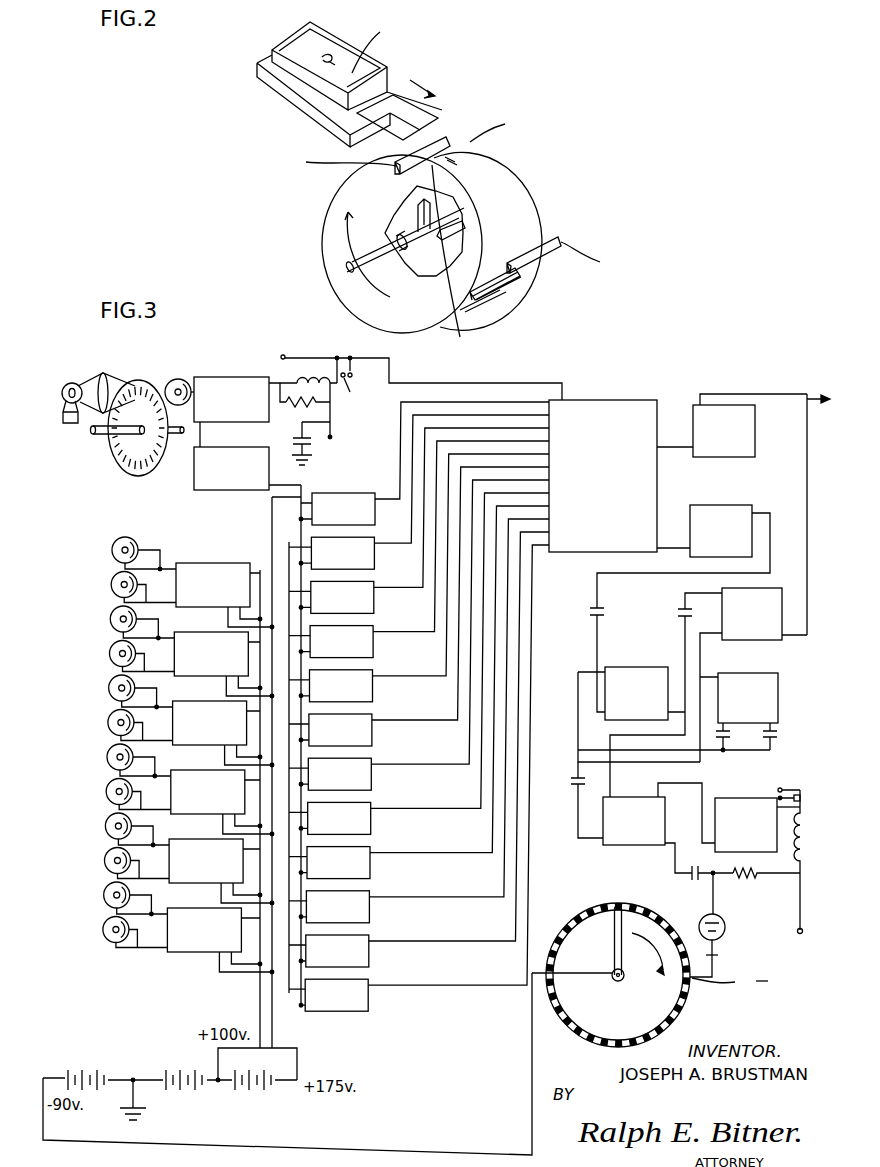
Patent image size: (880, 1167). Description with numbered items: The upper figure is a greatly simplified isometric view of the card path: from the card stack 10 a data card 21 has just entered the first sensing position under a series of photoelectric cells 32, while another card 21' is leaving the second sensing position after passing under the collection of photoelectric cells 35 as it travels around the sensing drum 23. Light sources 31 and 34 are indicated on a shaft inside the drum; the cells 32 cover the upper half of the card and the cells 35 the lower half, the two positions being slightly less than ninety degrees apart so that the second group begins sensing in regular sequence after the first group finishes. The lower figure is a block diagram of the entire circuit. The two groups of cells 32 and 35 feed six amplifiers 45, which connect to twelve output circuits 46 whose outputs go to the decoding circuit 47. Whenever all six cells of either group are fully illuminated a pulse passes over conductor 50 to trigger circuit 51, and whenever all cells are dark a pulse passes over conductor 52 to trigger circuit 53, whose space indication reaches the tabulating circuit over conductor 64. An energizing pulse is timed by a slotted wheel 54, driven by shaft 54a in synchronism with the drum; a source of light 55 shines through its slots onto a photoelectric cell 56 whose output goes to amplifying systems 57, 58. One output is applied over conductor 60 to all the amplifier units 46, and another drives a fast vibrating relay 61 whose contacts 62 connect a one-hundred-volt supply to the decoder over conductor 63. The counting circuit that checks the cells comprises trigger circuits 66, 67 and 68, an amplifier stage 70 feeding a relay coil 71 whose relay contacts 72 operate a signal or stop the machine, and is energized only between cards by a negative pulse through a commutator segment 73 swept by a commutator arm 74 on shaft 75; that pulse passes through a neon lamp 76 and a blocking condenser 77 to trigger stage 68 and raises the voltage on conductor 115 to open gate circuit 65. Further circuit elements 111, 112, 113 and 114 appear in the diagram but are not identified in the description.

In FIG. 2, the card stack 10 is at (393, 70).
In FIG. 2, the data card 21 is at (479, 111).
In FIG. 2, the data card 21' is at (516, 290).
In FIG. 2, the sensing drum 23 is at (510, 177).
In FIG. 2, the light source 31 is at (446, 190).
In FIG. 2, the photoelectric cells 32 is at (398, 170).
In FIG. 3, the photoelectric cells 32 is at (112, 550).
In FIG. 2, the light source 34 is at (463, 224).
In FIG. 2, the photoelectric cells 35 is at (560, 241).
In FIG. 3, the photoelectric cells 35 is at (105, 645).
In FIG. 3, the amplifiers 45 is at (220, 568).
In FIG. 3, the output circuits 46 is at (372, 537).
In FIG. 3, the decoding circuit 47 is at (612, 400).
In FIG. 3, the conductor 50 is at (666, 548).
In FIG. 3, the trigger circuit 51 is at (748, 505).
In FIG. 3, the conductor 52 is at (672, 447).
In FIG. 3, the trigger circuit 53 is at (740, 405).
In FIG. 3, the slotted wheel 54 is at (132, 382).
In FIG. 3, the shaft 54a is at (94, 432).
In FIG. 3, the source of light 55 is at (66, 383).
In FIG. 3, the photoelectric cell 56 is at (175, 380).
In FIG. 3, the amplifying system 57 is at (197, 377).
In FIG. 3, the amplifying system 58 is at (194, 480).
In FIG. 3, the conductor 60 is at (270, 496).
In FIG. 3, the fast vibrating relay 61 is at (312, 381).
In FIG. 3, the contacts 62 is at (352, 386).
In FIG. 3, the conductor 63 is at (512, 383).
In FIG. 3, the conductor 64 is at (809, 396).
In FIG. 3, the gate circuit 65 is at (782, 592).
In FIG. 3, the trigger circuit 66 is at (646, 667).
In FIG. 3, the trigger circuit 67 is at (778, 673).
In FIG. 3, the trigger circuit 68 is at (620, 847).
In FIG. 3, the amplifier stage 70 is at (748, 803).
In FIG. 3, the relay coil 71 is at (797, 850).
In FIG. 3, the relay contacts 72 is at (796, 790).
In FIG. 3, the commutator segment 73 is at (690, 985).
In FIG. 3, the commutator arm 74 is at (617, 915).
In FIG. 3, the shaft 75 is at (614, 981).
In FIG. 3, the neon lamp 76 is at (724, 920).
In FIG. 3, the blocking condenser 77 is at (690, 878).
In FIG. 3, the capacitor 111 is at (597, 577).
In FIG. 3, the lead 112 is at (578, 748).
In FIG. 3, the capacitor 113 is at (578, 835).
In FIG. 3, the lead 114 is at (728, 955).
In FIG. 3, the conductor 115 is at (696, 662).